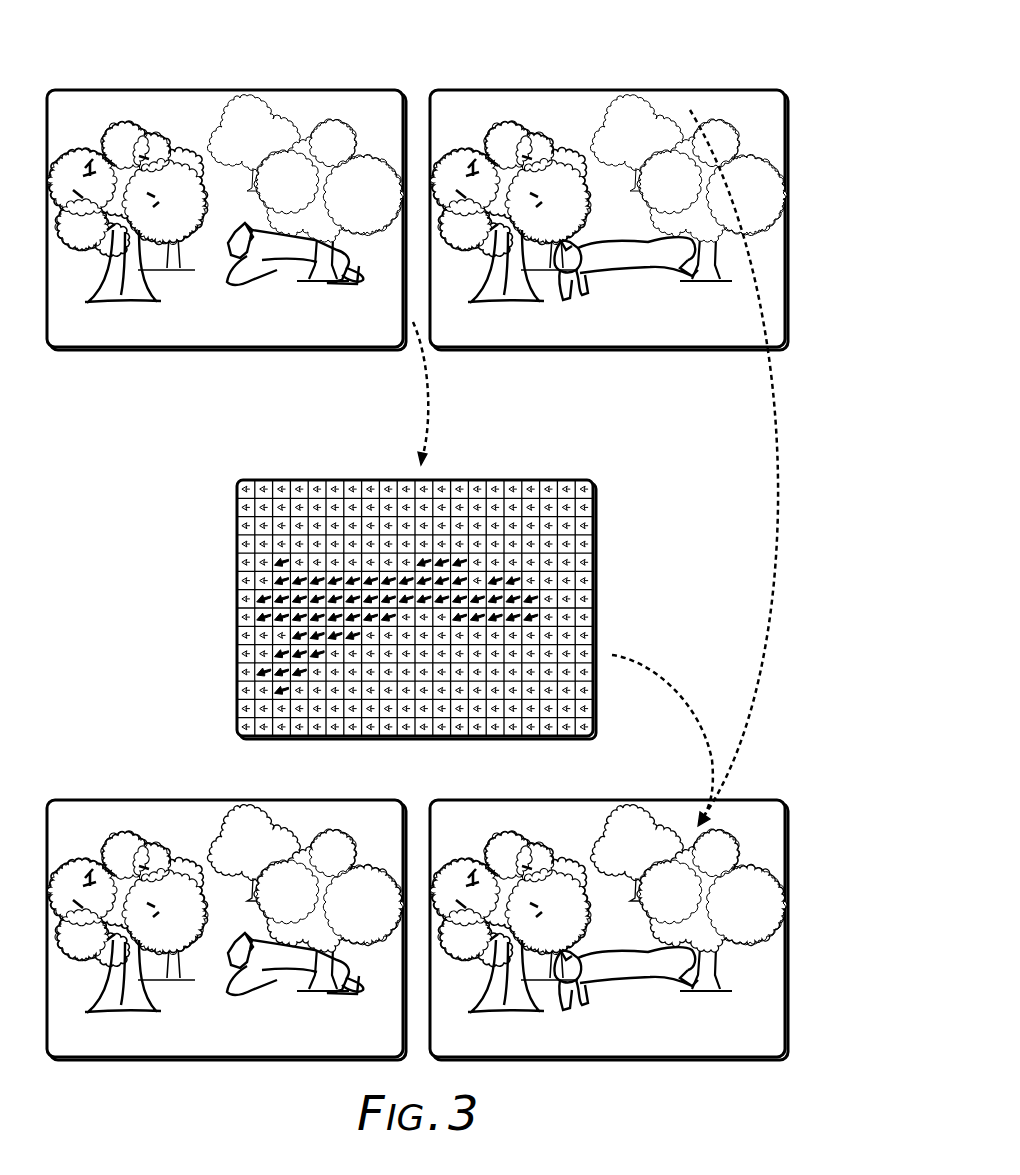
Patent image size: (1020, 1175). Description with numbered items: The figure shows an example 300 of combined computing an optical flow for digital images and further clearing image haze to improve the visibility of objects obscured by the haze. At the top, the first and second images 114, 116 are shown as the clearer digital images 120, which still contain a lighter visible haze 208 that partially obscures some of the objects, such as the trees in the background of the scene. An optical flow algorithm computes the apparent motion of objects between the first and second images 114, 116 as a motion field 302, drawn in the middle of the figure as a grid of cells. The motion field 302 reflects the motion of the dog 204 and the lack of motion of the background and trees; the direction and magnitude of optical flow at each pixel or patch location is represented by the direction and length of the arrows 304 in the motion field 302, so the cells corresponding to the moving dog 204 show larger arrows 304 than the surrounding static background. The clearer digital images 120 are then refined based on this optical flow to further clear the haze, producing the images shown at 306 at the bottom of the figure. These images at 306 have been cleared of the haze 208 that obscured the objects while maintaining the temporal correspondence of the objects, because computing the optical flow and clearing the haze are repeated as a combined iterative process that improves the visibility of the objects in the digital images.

The first image 114 is at (225, 233).
The second image 116 is at (665, 393).
The clearer digital images 120 is at (323, 90).
The dog 204 is at (309, 308).
The lighter visible haze 208 is at (305, 166).
The example of combined computing an optical flow and clearing image haze 300 is at (605, 62).
The motion field 302 is at (471, 590).
The arrows 304 is at (388, 542).
The refined digital images cleared of haze 306 is at (208, 783).